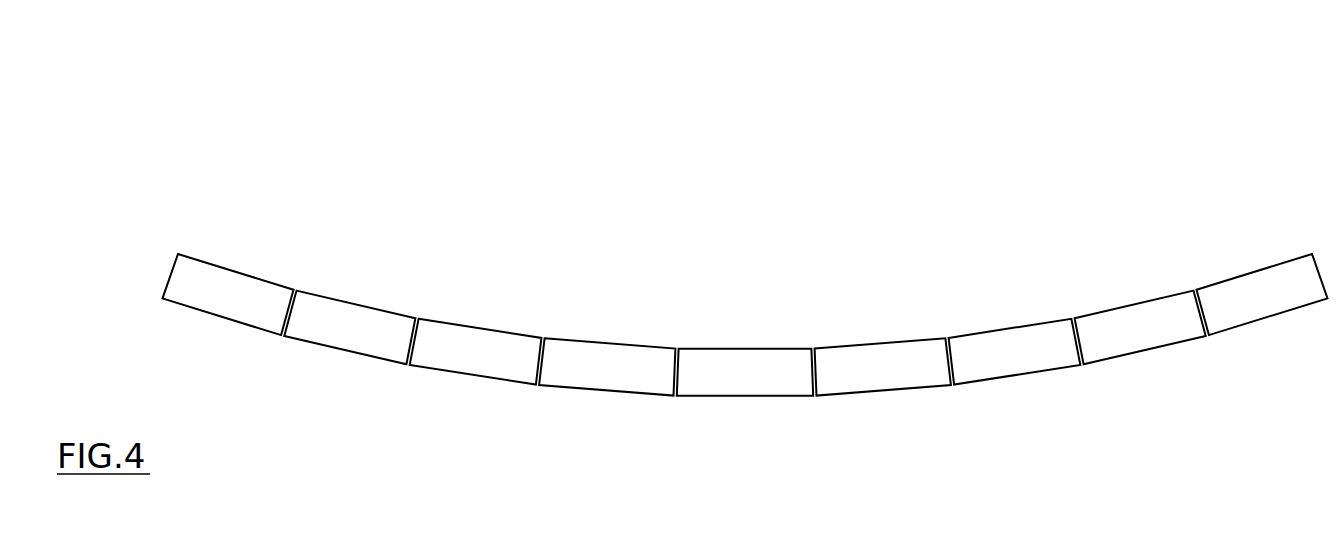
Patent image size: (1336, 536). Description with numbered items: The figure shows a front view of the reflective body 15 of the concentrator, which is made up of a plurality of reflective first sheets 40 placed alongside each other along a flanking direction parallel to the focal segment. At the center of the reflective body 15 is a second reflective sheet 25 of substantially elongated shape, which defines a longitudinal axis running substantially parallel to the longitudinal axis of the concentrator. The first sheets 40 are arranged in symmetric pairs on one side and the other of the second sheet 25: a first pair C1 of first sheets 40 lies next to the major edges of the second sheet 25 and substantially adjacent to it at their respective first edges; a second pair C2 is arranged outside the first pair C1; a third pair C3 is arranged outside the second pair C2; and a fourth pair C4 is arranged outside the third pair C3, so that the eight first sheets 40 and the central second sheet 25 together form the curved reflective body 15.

The reflective body 15 is at (686, 268).
The second reflective sheet 25 is at (742, 373).
The first sheet 40 is at (227, 293).
The first pair of first sheets C1 is at (907, 353).
The second pair of first sheets C2 is at (988, 343).
The third pair of first sheets C3 is at (1157, 308).
The fourth pair of first sheets C4 is at (1293, 277).